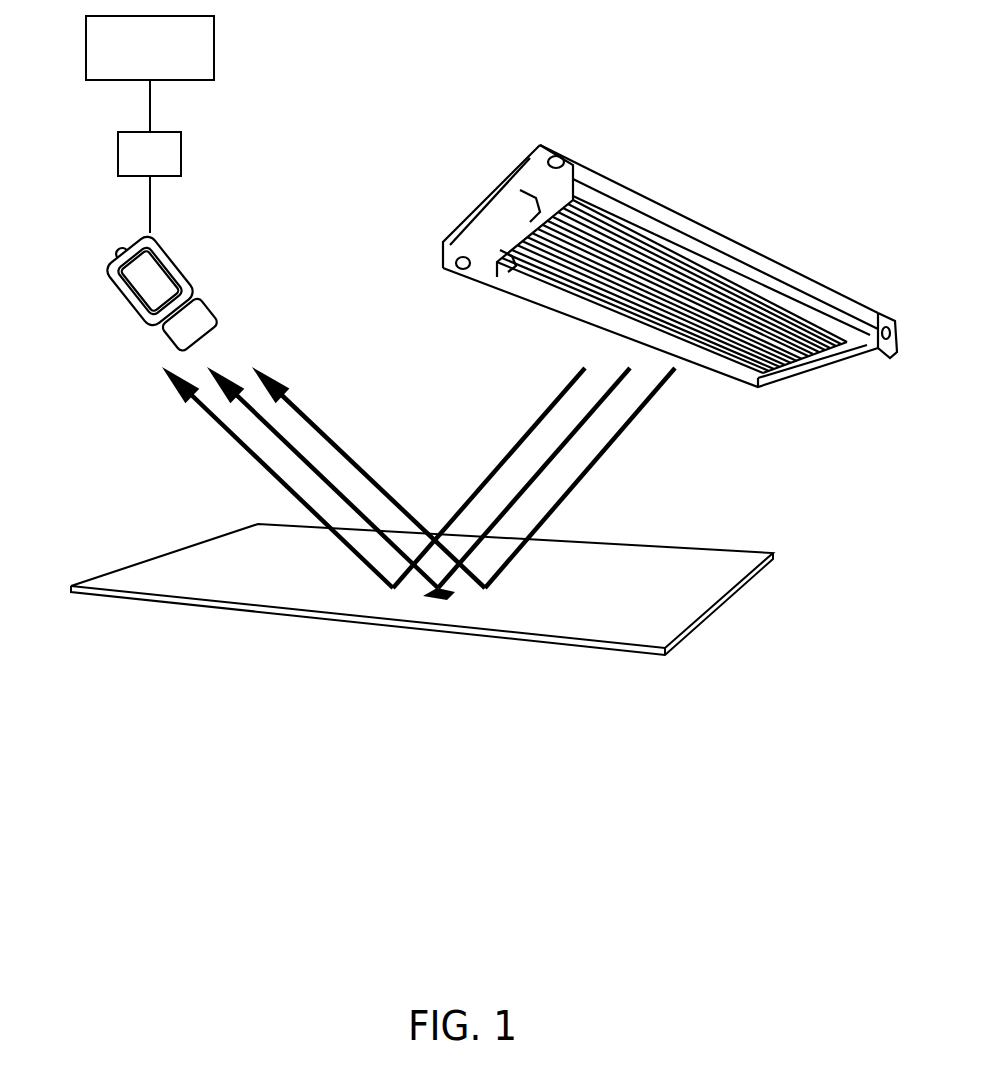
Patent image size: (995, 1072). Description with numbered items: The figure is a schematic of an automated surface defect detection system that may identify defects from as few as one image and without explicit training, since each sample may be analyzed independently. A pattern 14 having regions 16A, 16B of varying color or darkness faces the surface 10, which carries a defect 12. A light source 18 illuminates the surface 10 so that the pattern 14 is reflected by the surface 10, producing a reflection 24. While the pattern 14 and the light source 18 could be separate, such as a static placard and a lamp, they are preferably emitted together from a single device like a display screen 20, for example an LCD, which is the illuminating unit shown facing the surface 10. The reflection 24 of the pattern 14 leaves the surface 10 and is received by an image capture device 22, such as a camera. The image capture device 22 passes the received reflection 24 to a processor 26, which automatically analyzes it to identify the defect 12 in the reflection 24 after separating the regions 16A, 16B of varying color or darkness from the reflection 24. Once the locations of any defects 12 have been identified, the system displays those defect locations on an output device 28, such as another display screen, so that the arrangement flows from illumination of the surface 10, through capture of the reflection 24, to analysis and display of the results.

The surface 10 is at (527, 634).
The defect 12 is at (425, 598).
The pattern 14 is at (632, 270).
The region 16A is at (537, 222).
The region 16B is at (517, 252).
The light source 18 is at (614, 443).
The display screen 20 is at (737, 242).
The image capture device 22 is at (121, 303).
The reflection 24 is at (241, 443).
The processor 26 is at (118, 140).
The output device 28 is at (86, 27).